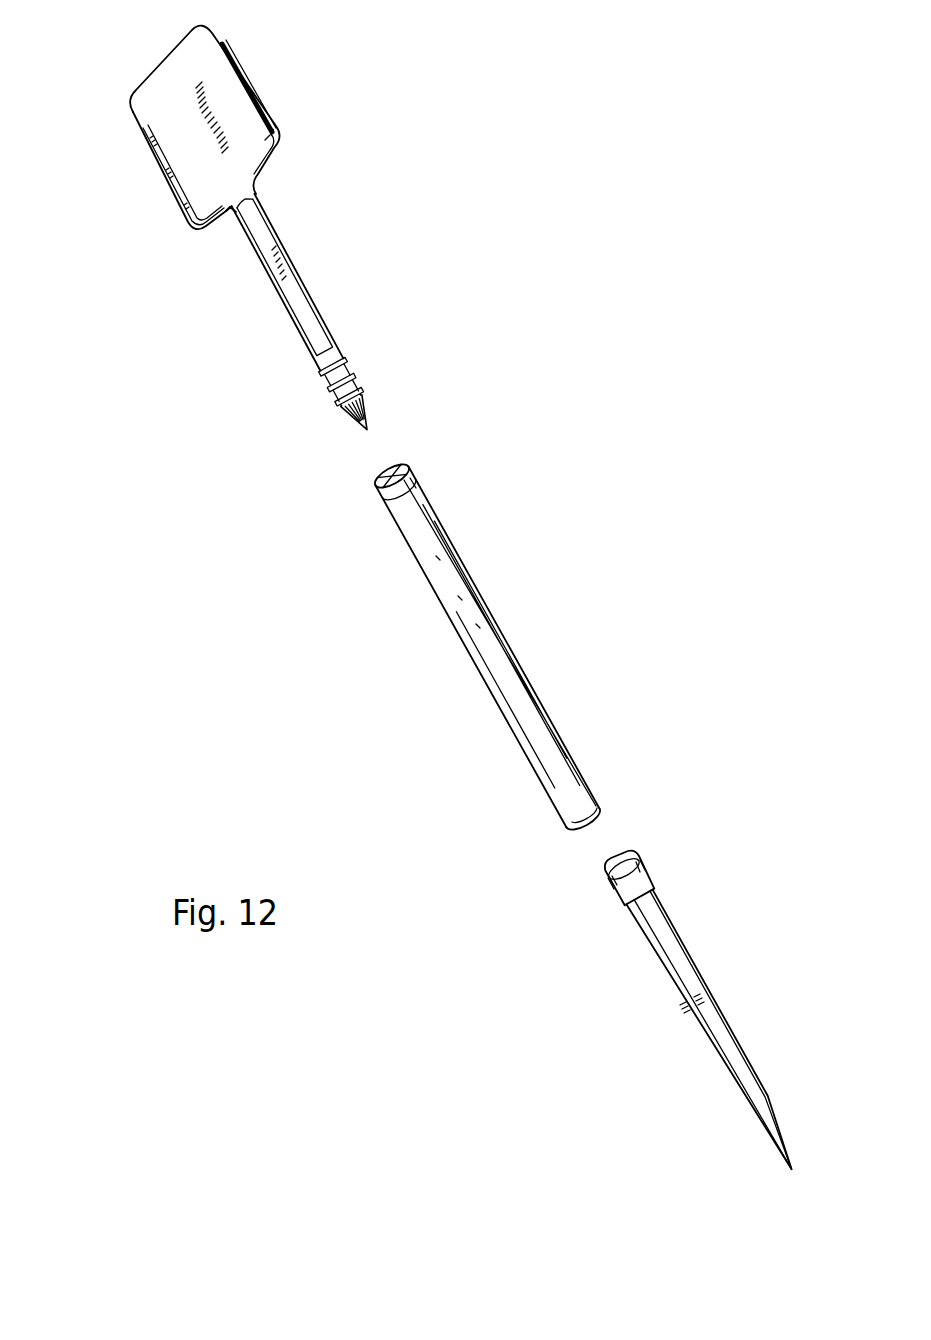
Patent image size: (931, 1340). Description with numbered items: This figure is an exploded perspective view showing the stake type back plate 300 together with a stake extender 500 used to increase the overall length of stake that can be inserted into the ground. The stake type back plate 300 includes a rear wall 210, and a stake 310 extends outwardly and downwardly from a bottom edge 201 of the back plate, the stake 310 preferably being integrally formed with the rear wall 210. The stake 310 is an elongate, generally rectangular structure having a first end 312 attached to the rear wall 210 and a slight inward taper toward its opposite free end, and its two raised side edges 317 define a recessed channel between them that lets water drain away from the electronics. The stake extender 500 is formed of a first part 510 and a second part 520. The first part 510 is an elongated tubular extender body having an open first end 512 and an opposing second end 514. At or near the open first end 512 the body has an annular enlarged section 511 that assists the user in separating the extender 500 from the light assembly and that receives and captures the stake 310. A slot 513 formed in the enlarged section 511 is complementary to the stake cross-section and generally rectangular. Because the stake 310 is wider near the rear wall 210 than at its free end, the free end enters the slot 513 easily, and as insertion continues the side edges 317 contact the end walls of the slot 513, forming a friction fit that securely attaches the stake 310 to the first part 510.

The stake type back plate 300 is at (310, 146).
The rear wall 210 is at (162, 94).
The bottom edge 201 is at (267, 172).
The stake 310 is at (263, 240).
The first end 312 is at (227, 215).
The raised side edges 317 is at (317, 305).
The stake extender 500 is at (626, 652).
The first part 510 is at (485, 600).
The enlarged section 511 is at (405, 498).
The open first end 512 is at (410, 462).
The slot 513 is at (383, 475).
The second end 514 is at (593, 812).
The second part 520 is at (698, 978).